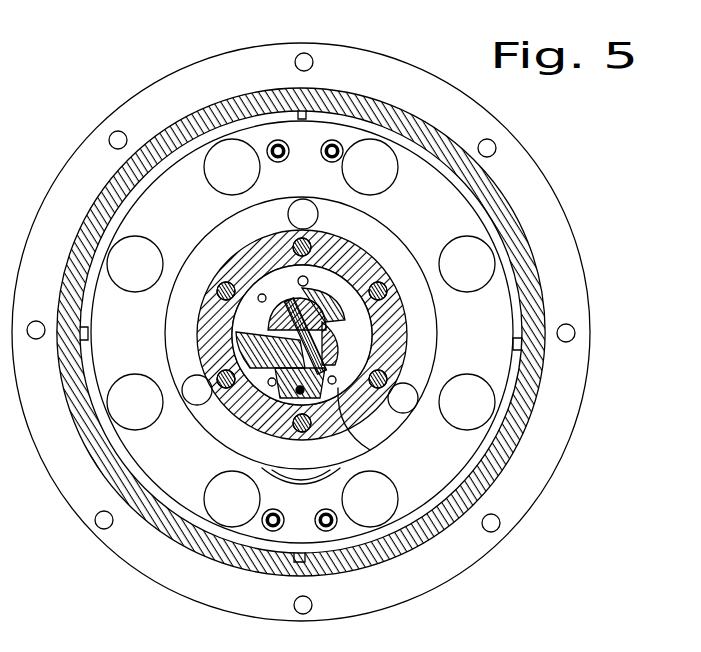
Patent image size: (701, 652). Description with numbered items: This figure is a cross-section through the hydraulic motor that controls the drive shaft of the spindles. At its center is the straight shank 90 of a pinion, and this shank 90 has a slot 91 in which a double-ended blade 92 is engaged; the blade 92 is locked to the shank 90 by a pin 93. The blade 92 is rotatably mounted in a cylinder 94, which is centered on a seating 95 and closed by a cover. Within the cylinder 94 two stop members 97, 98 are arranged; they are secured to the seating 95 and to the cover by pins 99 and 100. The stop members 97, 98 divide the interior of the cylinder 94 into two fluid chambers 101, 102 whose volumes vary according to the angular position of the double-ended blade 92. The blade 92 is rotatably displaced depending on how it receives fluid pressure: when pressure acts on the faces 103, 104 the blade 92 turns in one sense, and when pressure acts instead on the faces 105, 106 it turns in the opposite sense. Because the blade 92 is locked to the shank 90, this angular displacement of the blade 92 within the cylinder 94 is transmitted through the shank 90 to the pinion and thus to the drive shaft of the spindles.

The straight shank 90 is at (343, 357).
The slot 91 is at (340, 321).
The double-ended blade 92 is at (250, 350).
The pin 93 is at (335, 283).
The cylinder 94 is at (348, 403).
The seating 95 is at (490, 455).
The stop member 97 is at (252, 300).
The stop member 98 is at (317, 400).
The pin 99 is at (320, 267).
The pin 100 is at (253, 420).
The fluid chamber 101 is at (277, 272).
The fluid chamber 102 is at (370, 450).
The face 103 is at (257, 373).
The face 104 is at (315, 290).
The face 105 is at (352, 344).
The face 106 is at (237, 313).